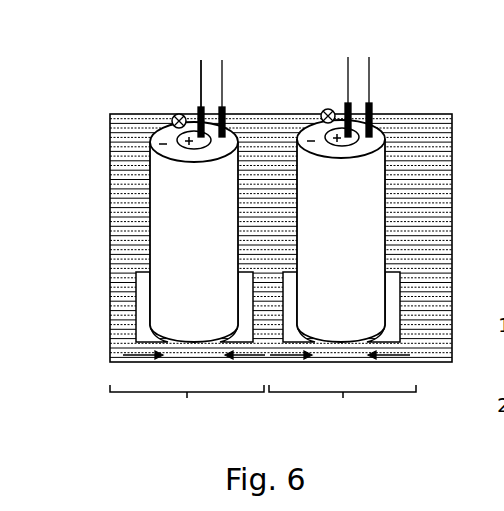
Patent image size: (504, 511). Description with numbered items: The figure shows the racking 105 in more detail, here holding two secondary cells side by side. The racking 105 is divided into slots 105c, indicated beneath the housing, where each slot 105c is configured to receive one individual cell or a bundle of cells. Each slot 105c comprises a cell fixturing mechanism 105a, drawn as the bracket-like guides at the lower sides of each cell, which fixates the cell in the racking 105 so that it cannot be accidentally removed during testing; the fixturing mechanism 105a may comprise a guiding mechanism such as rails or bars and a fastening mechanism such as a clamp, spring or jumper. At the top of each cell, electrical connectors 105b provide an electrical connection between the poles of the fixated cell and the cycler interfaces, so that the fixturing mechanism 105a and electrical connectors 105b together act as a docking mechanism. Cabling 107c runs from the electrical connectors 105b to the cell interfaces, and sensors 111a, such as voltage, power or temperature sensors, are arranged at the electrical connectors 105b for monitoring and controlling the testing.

The racking 105 is at (436, 162).
The cell fixturing mechanism 105a is at (278, 328).
The electrical connectors 105b is at (232, 95).
The slots 105c is at (263, 411).
The cabling 107c is at (190, 78).
The sensors 111a is at (166, 118).